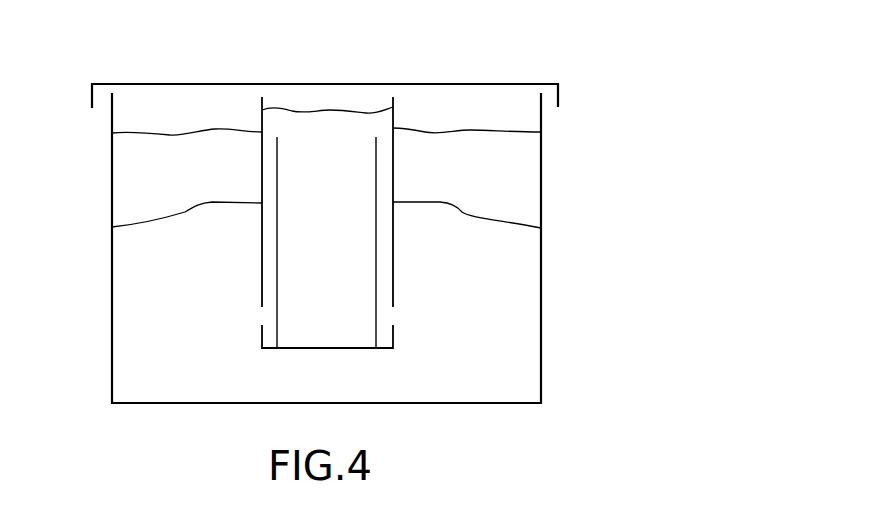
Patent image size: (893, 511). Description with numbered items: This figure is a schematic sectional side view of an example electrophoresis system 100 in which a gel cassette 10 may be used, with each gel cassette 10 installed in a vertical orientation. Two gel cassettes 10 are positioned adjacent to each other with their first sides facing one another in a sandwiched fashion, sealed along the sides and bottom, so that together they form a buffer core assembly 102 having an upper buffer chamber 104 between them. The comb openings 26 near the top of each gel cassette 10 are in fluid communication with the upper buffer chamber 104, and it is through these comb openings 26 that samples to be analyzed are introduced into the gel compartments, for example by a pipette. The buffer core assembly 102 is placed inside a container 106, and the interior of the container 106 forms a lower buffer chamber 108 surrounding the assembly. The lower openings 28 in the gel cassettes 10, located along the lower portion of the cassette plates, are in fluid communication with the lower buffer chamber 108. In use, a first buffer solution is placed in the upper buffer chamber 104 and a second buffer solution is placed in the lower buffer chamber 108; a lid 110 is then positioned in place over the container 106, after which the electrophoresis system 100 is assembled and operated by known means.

The electrophoresis system 100 is at (620, 196).
The buffer core assembly 102 is at (410, 150).
The upper buffer chamber 104 is at (327, 170).
The container 106 is at (542, 296).
The lower buffer chamber 108 is at (326, 208).
The lid 110 is at (208, 81).
The gel cassette 10 is at (112, 227).
The comb opening 26 is at (381, 125).
The lower opening 28 is at (255, 320).